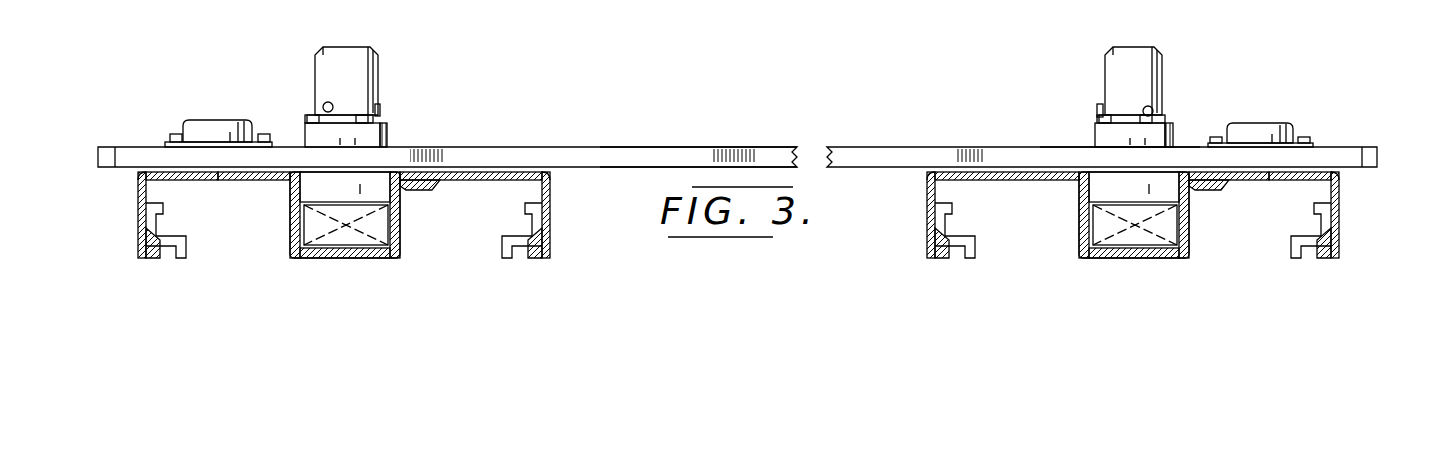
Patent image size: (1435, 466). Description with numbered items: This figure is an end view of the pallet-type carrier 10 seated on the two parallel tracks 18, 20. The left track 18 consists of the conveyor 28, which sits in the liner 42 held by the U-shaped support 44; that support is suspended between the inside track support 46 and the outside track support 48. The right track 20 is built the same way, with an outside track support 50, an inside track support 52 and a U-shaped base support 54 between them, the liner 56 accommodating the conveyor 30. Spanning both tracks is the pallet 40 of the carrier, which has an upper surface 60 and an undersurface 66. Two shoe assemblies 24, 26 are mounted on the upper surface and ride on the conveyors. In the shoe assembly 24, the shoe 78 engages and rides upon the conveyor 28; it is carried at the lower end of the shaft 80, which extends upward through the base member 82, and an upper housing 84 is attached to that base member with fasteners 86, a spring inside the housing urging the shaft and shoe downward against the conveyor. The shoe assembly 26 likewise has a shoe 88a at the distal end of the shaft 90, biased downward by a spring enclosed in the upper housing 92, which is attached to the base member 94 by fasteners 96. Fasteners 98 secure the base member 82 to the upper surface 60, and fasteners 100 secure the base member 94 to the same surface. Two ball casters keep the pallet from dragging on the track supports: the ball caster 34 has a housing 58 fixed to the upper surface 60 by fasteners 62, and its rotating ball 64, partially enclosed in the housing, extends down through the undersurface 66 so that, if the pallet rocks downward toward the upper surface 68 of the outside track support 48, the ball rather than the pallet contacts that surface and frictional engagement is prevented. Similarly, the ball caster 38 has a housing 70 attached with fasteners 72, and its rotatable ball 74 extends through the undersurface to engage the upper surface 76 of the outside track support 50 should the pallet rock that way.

The carrier 10 is at (898, 80).
The track 18 is at (553, 200).
The track 20 is at (922, 197).
The shoe assembly 24 is at (388, 54).
The shoe assembly 26 is at (1166, 50).
The conveyor 28 is at (350, 240).
The conveyor 30 is at (1137, 240).
The ball caster 34 is at (205, 118).
The ball caster 38 is at (1273, 118).
The pallet 40 is at (742, 147).
The liner 42 is at (292, 245).
The U-shaped support 44 is at (400, 247).
The inside track support 46 is at (490, 180).
The outside track support 48 is at (190, 180).
The outside track support 50 is at (1277, 178).
The inside track support 52 is at (1000, 180).
The U-shaped base support 54 is at (1080, 235).
The liner 56 is at (1181, 250).
The housing 58 is at (216, 120).
The upper surface 60 is at (700, 146).
The fasteners 62 is at (170, 136).
The rotating ball 64 is at (222, 180).
The undersurface 66 is at (660, 167).
The upper surface 68 is at (140, 172).
The housing 70 is at (1262, 122).
The fasteners 72 is at (1218, 137).
The rotatable ball 74 is at (1262, 176).
The upper surface 76 is at (1325, 172).
The shoe 78 is at (398, 192).
The shaft 80 is at (378, 166).
The base member 82 is at (390, 132).
The upper housing 84 is at (345, 47).
The fasteners 86 is at (380, 106).
The shoe 88a is at (1182, 202).
The shaft 90 is at (1115, 165).
The upper housing 92 is at (1142, 47).
The base member 94 is at (1098, 143).
The fasteners 96 is at (1100, 112).
The fasteners 98 is at (311, 116).
The fasteners 100 is at (1168, 122).